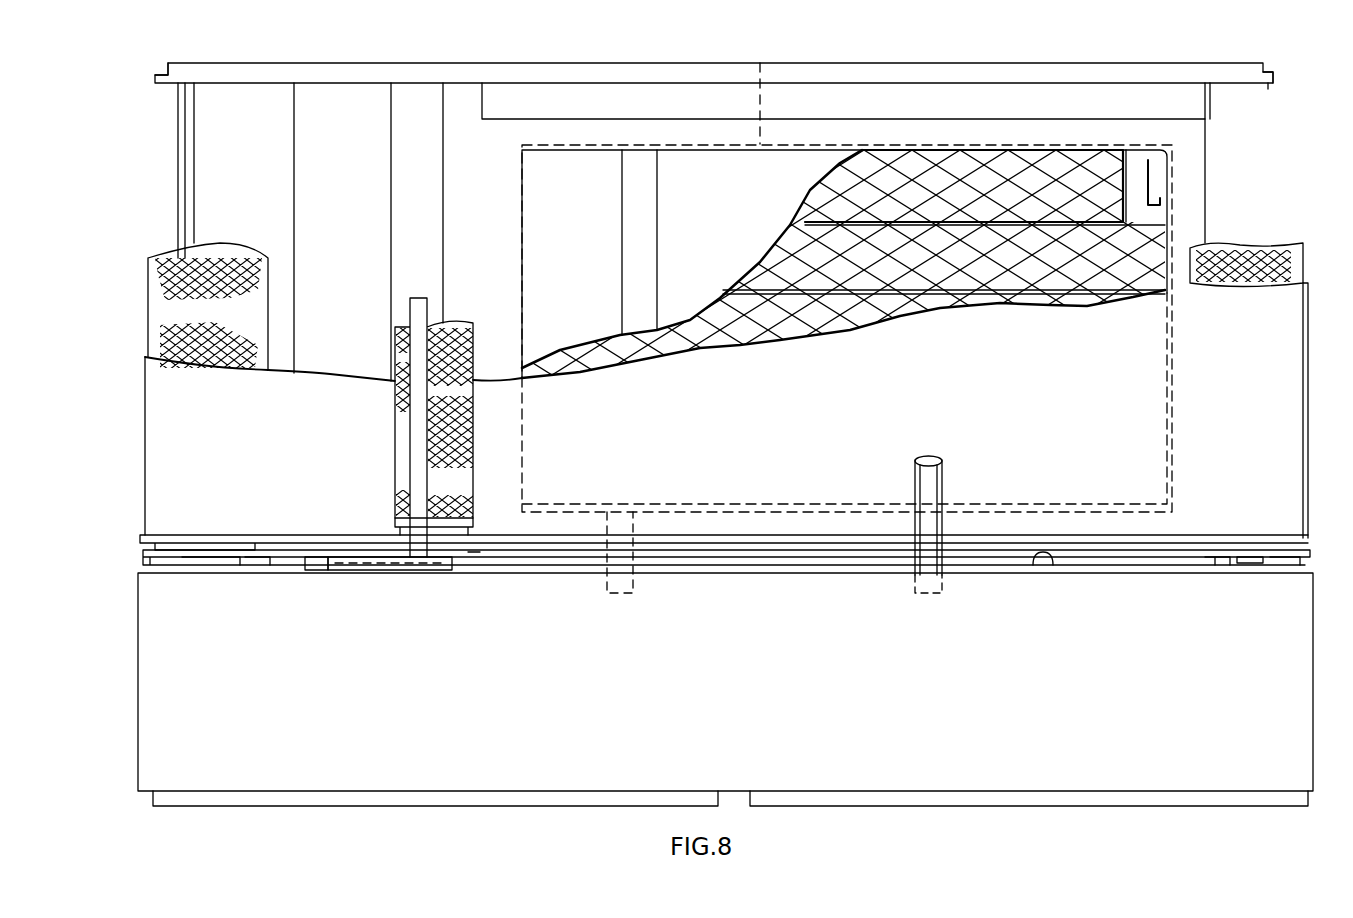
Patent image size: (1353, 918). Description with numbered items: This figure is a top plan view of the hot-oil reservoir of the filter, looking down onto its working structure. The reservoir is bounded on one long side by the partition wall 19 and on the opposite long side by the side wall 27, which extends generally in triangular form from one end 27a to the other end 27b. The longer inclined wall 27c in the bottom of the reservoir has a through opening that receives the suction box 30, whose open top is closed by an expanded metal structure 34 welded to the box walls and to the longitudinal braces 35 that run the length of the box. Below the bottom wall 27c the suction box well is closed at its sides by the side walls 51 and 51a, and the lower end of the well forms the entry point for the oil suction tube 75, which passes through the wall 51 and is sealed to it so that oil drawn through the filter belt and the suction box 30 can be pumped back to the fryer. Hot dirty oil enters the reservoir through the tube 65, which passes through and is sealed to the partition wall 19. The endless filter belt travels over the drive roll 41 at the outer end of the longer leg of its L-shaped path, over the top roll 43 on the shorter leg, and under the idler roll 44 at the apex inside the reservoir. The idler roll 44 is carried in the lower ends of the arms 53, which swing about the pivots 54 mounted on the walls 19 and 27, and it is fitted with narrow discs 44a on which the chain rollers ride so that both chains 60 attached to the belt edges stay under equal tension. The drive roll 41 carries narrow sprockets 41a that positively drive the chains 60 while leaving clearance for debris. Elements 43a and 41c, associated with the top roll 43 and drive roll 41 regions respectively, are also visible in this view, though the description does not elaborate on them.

The side wall 27 is at (968, 72).
The end of side wall 27a is at (168, 68).
The other end of side wall 27b is at (1270, 75).
The inclined bottom wall 27c is at (500, 140).
The side wall of suction box well 51a is at (779, 87).
The suction box 30 is at (1005, 106).
The expanded metal structure 34 is at (895, 170).
The longitudinal braces 35 is at (825, 287).
The drive roll 41 is at (1285, 262).
The top roll 43 is at (162, 292).
The idler roll 44 is at (462, 480).
The narrow discs 44a is at (535, 495).
The left block base plate 43a is at (140, 540).
The chains 60 is at (143, 557).
The pivots 54 is at (318, 570).
The arms 53 is at (405, 570).
The suction tube 75 is at (636, 580).
The side wall of suction box well 51 is at (812, 513).
The tube 65 is at (945, 592).
The partition wall 19 is at (1043, 566).
The sprockets 41a is at (1210, 560).
The right block clip 41c is at (1250, 565).